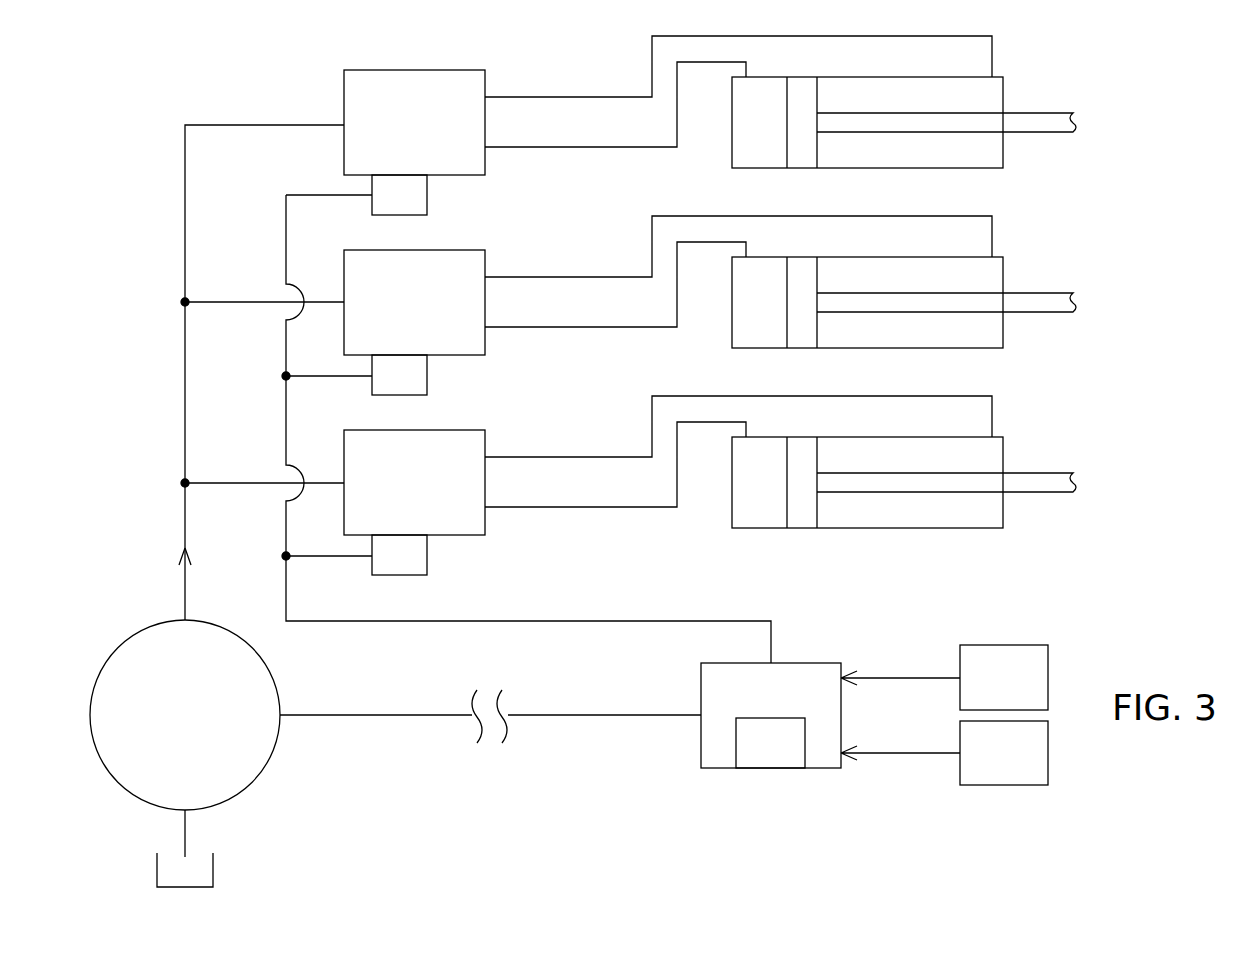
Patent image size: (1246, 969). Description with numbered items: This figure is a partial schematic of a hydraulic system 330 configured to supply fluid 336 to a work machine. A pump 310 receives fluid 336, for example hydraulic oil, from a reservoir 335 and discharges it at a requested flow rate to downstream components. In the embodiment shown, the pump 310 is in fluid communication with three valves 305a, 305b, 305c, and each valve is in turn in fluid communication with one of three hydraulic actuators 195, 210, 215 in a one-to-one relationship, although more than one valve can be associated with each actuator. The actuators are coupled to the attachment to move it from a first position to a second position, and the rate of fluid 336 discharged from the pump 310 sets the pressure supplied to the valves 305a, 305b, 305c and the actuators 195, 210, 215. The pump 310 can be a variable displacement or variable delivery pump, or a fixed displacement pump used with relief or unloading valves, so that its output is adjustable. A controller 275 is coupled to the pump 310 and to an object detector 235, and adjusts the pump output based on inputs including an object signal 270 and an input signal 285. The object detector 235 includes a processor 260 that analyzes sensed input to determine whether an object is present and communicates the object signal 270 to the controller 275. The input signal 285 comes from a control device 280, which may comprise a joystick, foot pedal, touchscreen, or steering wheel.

The valve 305a is at (445, 135).
The valve 305b is at (445, 315).
The valve 305c is at (445, 495).
The hydraulic actuator 195 is at (732, 147).
The hydraulic actuator 210 is at (732, 327).
The hydraulic actuator 215 is at (732, 507).
The pump 310 is at (138, 631).
The reservoir 335 is at (266, 859).
The fluid 336 is at (213, 862).
The hydraulic system 330 is at (468, 795).
The controller 275 is at (748, 701).
The processor 260 is at (748, 753).
The control device 280 is at (982, 688).
The object detector 235 is at (982, 762).
The input signal 285 is at (902, 677).
The object signal 270 is at (898, 754).